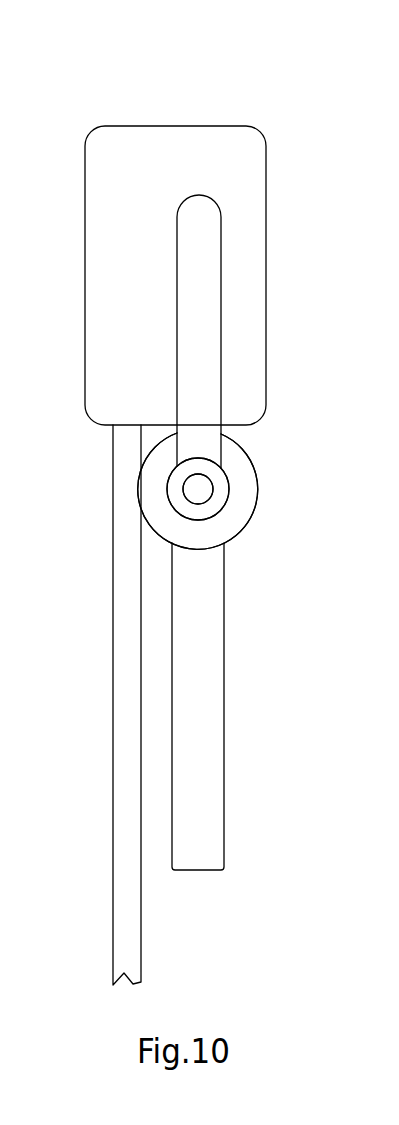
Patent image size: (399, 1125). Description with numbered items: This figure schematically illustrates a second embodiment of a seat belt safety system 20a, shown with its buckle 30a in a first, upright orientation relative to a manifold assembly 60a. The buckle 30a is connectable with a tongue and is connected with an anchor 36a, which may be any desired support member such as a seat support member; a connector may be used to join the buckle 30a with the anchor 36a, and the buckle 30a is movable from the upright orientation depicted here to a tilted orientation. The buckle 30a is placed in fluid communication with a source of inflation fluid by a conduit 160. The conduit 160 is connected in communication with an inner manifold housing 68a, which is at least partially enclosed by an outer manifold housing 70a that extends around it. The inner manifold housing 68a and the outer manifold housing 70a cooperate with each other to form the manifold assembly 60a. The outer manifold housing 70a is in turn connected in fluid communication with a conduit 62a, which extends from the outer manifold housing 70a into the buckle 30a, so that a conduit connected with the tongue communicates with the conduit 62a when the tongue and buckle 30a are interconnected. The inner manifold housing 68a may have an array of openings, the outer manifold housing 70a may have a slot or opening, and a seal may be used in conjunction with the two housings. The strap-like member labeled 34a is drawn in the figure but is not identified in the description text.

The seat belt safety system 20a is at (315, 107).
The buckle 30a is at (247, 237).
The conduit 62a is at (203, 308).
The inner manifold housing 68a is at (197, 465).
The anchor 36a is at (198, 488).
The manifold assembly 60a is at (255, 508).
The outer manifold housing 70a is at (235, 525).
The strand 34a is at (128, 770).
The conduit 160 is at (203, 743).